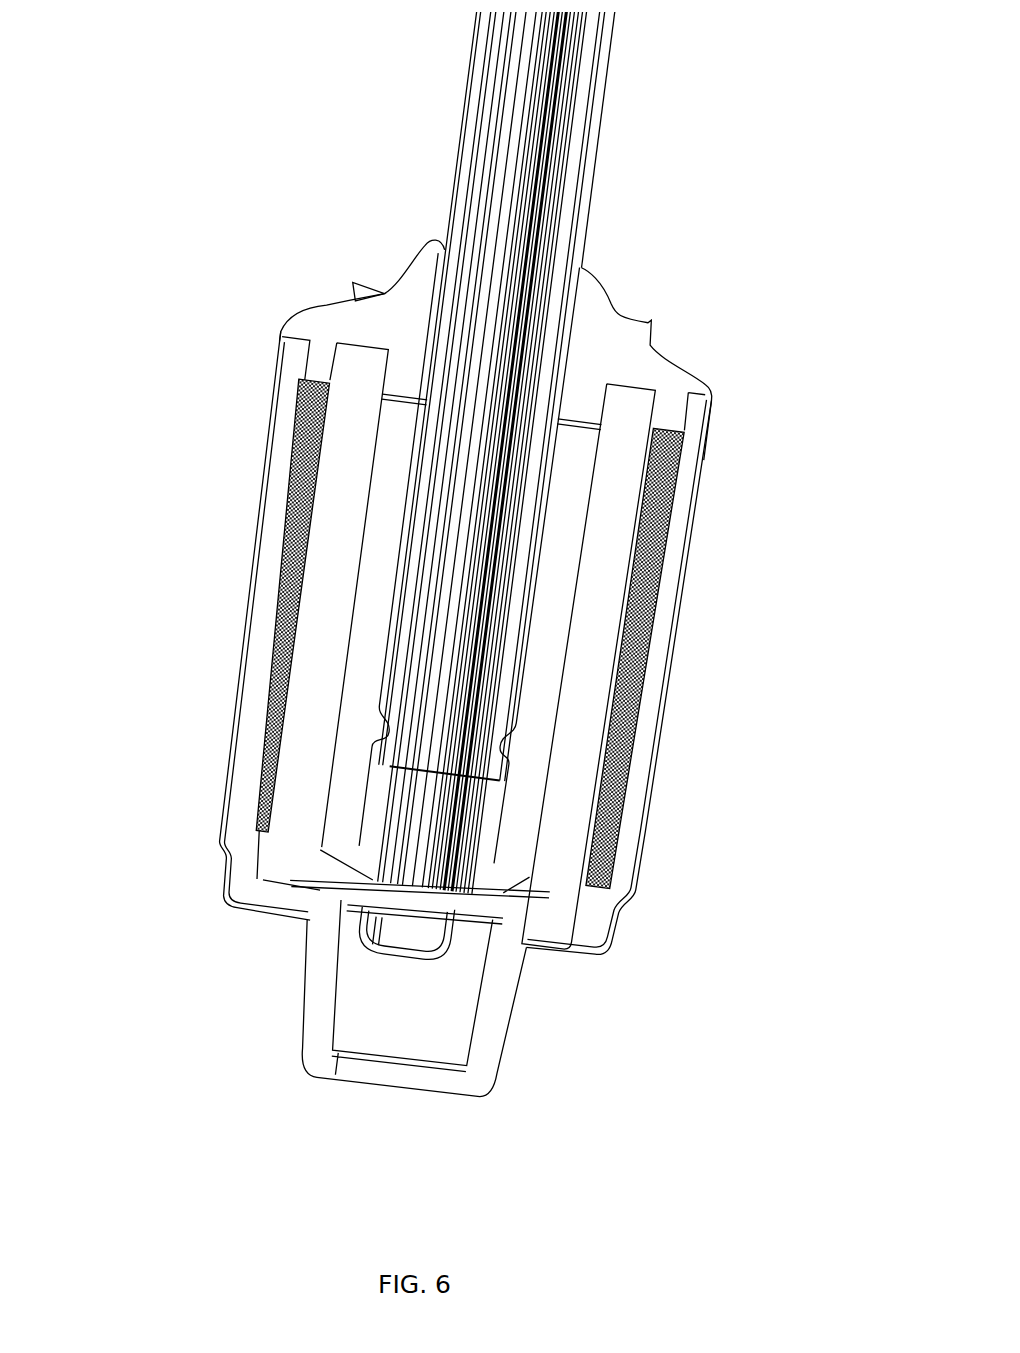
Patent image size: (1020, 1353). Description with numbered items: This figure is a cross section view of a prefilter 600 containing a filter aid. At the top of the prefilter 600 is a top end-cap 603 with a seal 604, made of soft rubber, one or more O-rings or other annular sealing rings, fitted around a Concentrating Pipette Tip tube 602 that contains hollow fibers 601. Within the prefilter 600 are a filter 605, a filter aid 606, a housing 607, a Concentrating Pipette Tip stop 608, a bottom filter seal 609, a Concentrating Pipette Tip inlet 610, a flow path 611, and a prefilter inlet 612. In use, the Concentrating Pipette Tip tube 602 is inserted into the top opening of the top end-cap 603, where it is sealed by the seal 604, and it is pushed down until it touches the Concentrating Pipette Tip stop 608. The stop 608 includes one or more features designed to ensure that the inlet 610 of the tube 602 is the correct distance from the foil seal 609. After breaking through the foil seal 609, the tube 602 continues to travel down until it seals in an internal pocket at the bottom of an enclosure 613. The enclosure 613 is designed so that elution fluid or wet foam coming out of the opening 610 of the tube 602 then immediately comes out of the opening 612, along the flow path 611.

The prefilter 600 is at (760, 583).
The hollow fibers 601 is at (507, 146).
The Concentrating Pipette Tip tube 602 is at (450, 186).
The top end-cap 603 is at (668, 316).
The seal 604 is at (583, 263).
The filter 605 is at (355, 368).
The filter aid 606 is at (300, 473).
The housing 607 is at (258, 577).
The Concentrating Pipette Tip stop 608 is at (330, 866).
The bottom filter seal 609 is at (345, 897).
The Concentrating Pipette Tip inlet 610 is at (510, 918).
The flow path 611 is at (436, 943).
The prefilter inlet 612 is at (415, 1080).
The enclosure 613 is at (392, 1000).